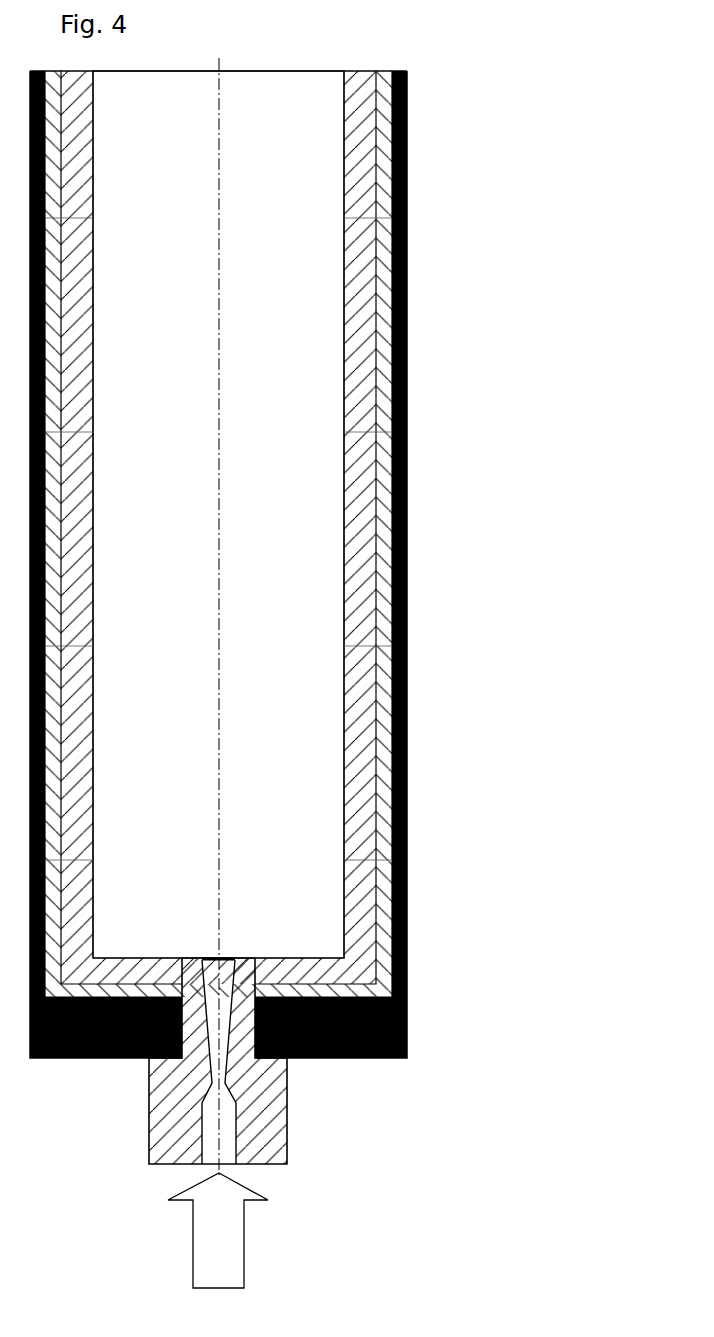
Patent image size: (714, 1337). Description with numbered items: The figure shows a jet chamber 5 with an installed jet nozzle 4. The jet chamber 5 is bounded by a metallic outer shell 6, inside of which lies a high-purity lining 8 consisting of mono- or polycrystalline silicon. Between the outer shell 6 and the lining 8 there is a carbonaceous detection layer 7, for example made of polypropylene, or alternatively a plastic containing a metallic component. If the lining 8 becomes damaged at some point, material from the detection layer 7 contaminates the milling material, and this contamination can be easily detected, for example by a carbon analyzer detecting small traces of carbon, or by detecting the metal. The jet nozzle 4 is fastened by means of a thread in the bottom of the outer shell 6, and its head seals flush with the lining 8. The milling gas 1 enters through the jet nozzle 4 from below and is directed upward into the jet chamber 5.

The milling gas 1 is at (218, 1230).
The jet nozzle 4 is at (277, 1136).
The jet chamber 5 is at (275, 588).
The outer shell 6 is at (408, 1028).
The detection layer 7 is at (386, 884).
The lining 8 is at (363, 758).